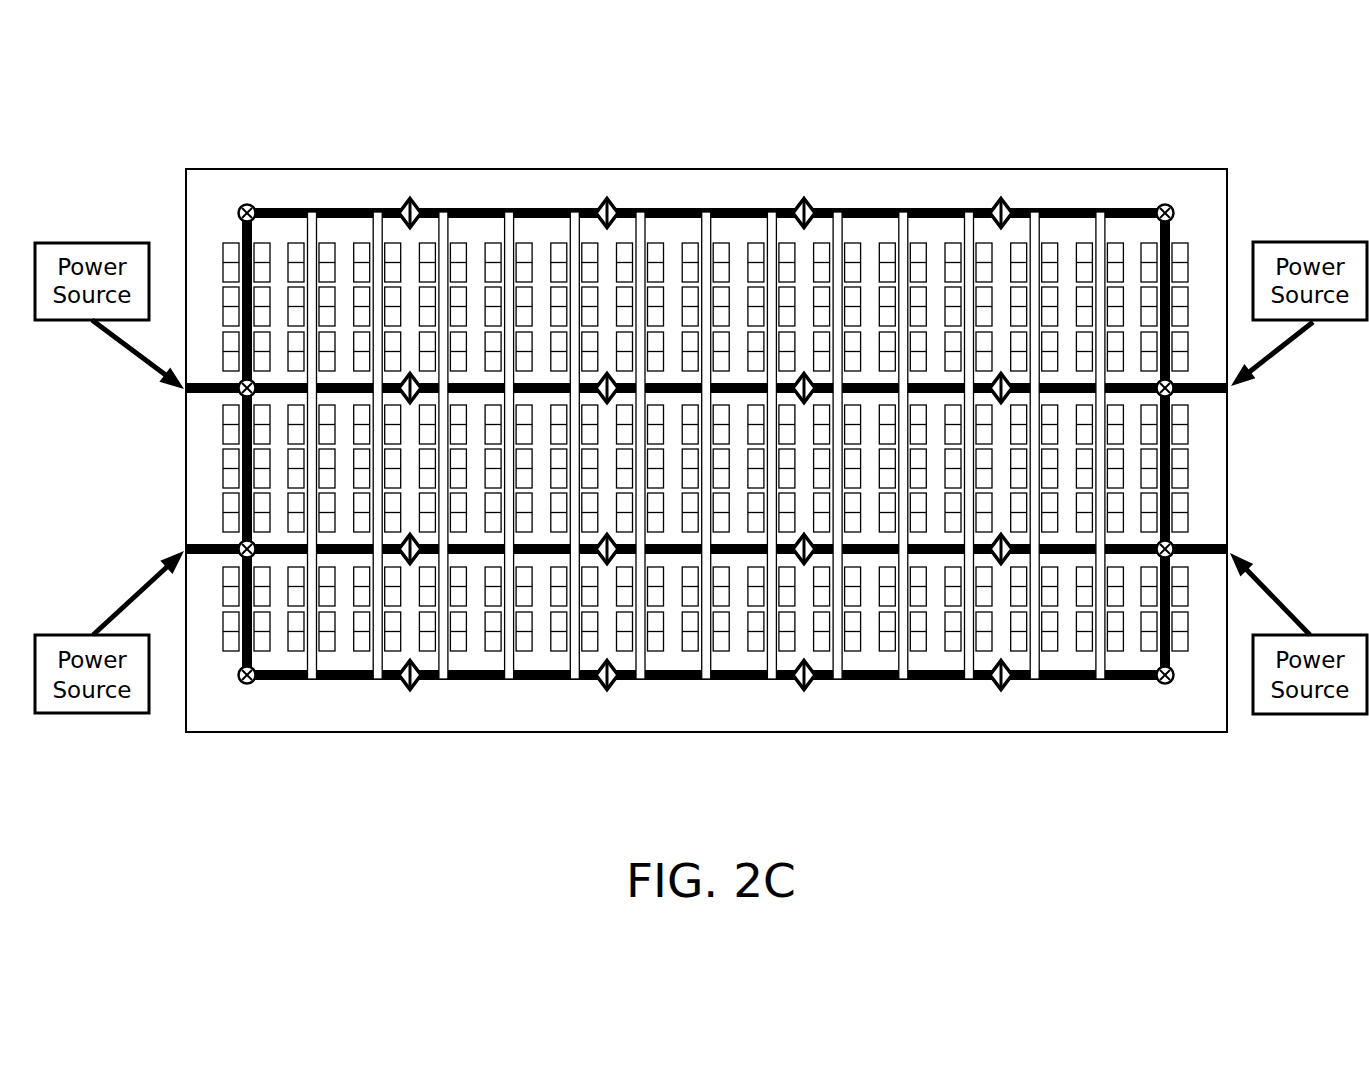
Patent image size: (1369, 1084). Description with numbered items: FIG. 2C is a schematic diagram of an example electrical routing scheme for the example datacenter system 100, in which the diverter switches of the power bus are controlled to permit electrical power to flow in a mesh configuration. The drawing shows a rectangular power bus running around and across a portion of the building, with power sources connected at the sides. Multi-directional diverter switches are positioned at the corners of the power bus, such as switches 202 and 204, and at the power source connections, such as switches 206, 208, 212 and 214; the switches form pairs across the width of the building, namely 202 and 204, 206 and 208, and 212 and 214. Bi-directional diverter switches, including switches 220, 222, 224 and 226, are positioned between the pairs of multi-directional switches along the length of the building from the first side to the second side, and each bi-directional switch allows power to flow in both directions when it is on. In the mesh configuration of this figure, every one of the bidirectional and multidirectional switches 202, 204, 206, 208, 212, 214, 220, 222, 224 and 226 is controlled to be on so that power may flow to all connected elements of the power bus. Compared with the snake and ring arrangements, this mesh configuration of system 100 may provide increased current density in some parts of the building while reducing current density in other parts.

The system 100 is at (728, 781).
The multi-directional diverter switch 202 is at (247, 204).
The multi-directional diverter switch 204 is at (1167, 204).
The multi-directional diverter switch 206 is at (1172, 395).
The multi-directional diverter switch 208 is at (238, 392).
The multi-directional diverter switch 212 is at (240, 543).
The multi-directional diverter switch 214 is at (1172, 543).
The bi-directional diverter switch 220 is at (995, 688).
The bi-directional diverter switch 222 is at (997, 545).
The bi-directional diverter switch 224 is at (995, 384).
The switch 226 is at (996, 206).